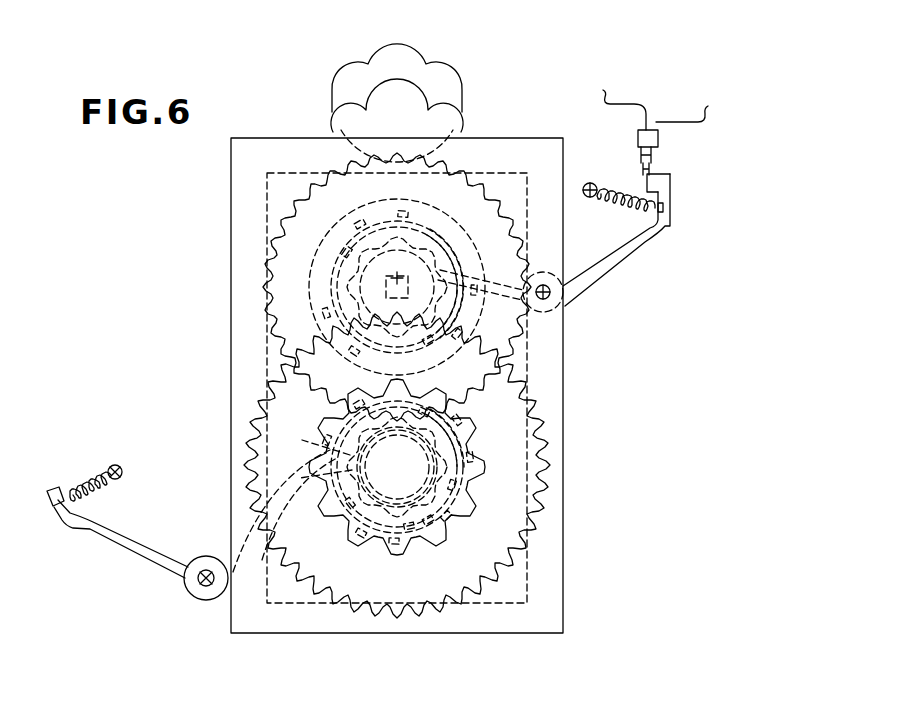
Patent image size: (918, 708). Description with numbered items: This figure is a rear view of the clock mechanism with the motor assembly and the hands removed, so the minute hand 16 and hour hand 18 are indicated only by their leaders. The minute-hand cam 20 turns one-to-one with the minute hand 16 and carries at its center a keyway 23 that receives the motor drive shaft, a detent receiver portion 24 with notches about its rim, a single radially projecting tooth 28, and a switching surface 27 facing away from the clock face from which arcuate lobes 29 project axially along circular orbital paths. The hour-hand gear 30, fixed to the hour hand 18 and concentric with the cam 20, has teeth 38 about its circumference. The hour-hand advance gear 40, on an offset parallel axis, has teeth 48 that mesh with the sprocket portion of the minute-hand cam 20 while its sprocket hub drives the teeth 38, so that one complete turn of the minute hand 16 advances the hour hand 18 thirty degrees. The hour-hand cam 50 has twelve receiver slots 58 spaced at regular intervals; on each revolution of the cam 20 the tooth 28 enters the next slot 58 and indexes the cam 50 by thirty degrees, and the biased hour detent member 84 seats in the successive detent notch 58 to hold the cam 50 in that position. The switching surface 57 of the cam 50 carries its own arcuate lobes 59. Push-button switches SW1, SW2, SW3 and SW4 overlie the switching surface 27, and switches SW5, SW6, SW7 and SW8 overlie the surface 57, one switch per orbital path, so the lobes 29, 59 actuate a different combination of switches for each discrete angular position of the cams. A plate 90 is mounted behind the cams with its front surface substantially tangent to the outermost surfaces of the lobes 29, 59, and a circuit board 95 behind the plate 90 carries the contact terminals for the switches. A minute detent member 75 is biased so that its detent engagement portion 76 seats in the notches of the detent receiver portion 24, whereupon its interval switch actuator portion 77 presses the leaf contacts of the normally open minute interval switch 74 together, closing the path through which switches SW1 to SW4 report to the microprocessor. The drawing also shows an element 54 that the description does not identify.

The minute hand 16 is at (367, 53).
The hour hand 18 is at (403, 210).
The switch SW4 is at (341, 128).
The minute-hand cam 20 is at (300, 238).
The keyway 23 is at (372, 203).
The detent receiver portion 24 is at (365, 245).
The switching surface 27 is at (527, 173).
The tooth 28 is at (440, 400).
The arcuate lobes 29 is at (474, 175).
The hour-hand gear 30 is at (355, 290).
The teeth 38 is at (262, 283).
The hour-hand advance gear 40 is at (262, 402).
The teeth 48 is at (340, 382).
The hour-hand cam 50 is at (345, 420).
The lobed hub 54 is at (470, 500).
The switching surface 57 is at (440, 495).
The receiver slots 58 is at (500, 450).
The arcuate lobes 59 is at (452, 514).
The minute interval switch 74 is at (680, 141).
The minute detent member 75 is at (617, 253).
The detent engagement portion 76 is at (535, 229).
The interval switch actuator portion 77 is at (663, 170).
The hour detent member 84 is at (152, 563).
The plate 90 is at (485, 225).
The circuit board 95 is at (232, 493).
The switch SW1 is at (462, 334).
The switch SW2 is at (348, 349).
The switch SW3 is at (343, 255).
The switch SW5 is at (455, 485).
The switch SW6 is at (462, 420).
The switch SW7 is at (345, 500).
The switch SW8 is at (410, 530).